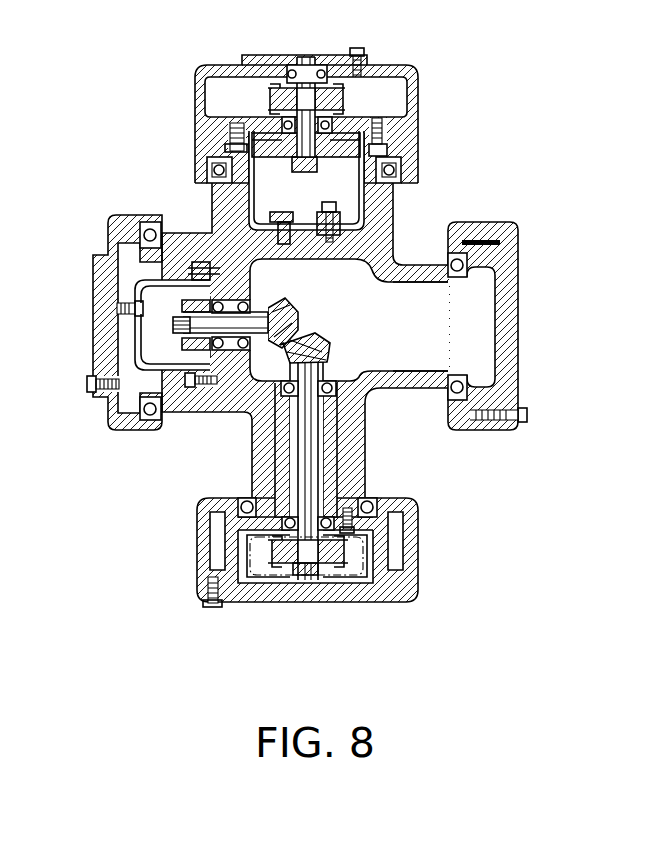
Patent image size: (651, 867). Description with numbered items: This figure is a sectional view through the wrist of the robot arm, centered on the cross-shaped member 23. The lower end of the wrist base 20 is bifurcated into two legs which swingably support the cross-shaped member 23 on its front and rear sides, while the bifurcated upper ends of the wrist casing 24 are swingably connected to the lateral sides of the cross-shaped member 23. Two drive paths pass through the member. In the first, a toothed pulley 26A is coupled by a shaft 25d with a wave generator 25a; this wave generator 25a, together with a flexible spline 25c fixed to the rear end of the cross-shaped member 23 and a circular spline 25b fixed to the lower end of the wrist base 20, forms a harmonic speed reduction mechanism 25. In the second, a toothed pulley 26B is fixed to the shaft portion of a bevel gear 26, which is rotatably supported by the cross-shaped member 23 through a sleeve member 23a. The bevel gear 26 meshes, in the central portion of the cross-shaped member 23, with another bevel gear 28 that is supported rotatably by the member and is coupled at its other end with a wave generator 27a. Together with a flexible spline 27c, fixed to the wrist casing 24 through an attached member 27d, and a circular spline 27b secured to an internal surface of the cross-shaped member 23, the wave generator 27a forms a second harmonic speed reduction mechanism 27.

The wrist base 20 is at (195, 132).
The cross-shaped member 23 is at (252, 458).
The sleeve member 23a is at (337, 430).
The wrist casing 24 is at (115, 222).
The harmonic speed reduction mechanism 25 is at (490, 176).
The wave generator 25a is at (290, 157).
The circular spline 25b is at (392, 140).
The flexible spline 25c is at (367, 211).
The shaft 25d is at (307, 72).
The bevel gear 26 is at (320, 356).
The toothed pulley 26A is at (273, 98).
The toothed pulley 26B is at (326, 566).
The harmonic speed reduction mechanism 27 is at (58, 451).
The wave generator 27a is at (190, 355).
The circular spline 27b is at (206, 262).
The flexible spline 27c is at (130, 364).
The attached member 27d is at (100, 313).
The bevel gear 28 is at (290, 322).